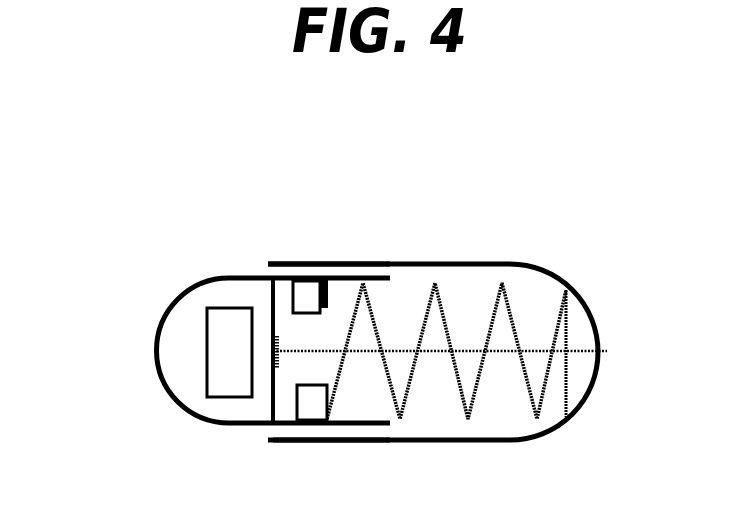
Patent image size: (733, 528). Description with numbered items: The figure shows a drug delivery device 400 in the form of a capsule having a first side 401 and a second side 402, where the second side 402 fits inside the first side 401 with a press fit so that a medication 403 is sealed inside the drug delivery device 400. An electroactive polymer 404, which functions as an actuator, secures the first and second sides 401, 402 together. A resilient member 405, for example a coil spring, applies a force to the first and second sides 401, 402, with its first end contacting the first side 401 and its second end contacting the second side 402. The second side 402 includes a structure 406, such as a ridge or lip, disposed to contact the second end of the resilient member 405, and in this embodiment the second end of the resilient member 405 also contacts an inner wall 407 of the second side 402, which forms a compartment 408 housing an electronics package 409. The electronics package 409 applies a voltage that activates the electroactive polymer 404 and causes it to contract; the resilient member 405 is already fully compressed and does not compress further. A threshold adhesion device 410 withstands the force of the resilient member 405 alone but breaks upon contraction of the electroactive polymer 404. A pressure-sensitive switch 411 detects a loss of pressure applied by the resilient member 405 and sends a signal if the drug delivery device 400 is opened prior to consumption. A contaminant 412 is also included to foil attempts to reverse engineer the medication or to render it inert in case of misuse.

The drug delivery device 400 is at (150, 195).
The first side 401 is at (597, 313).
The second side 402 is at (155, 327).
The medication 403 is at (474, 300).
The electroactive polymer 404 is at (272, 316).
The resilient member 405 is at (480, 385).
The structure 406 is at (327, 297).
The inner wall 407 is at (297, 350).
The compartment 408 is at (184, 390).
The electronics package 409 is at (243, 398).
The threshold adhesion device 410 is at (277, 367).
The switch 411 is at (308, 424).
The contaminant 412 is at (303, 276).